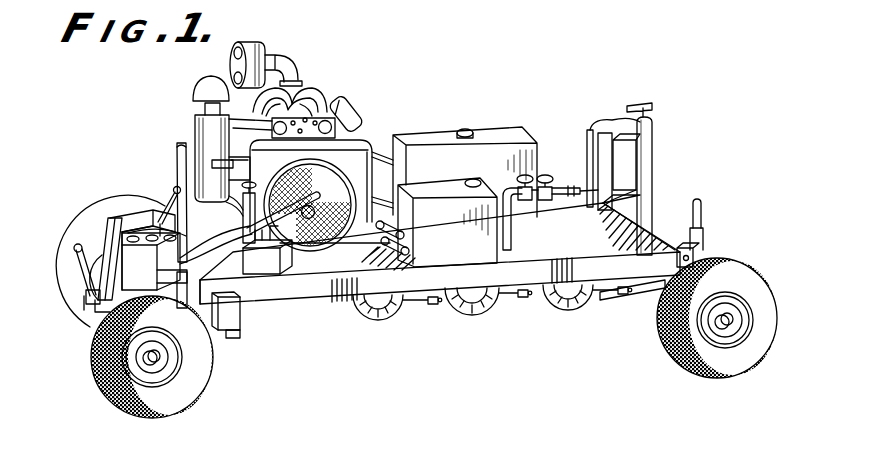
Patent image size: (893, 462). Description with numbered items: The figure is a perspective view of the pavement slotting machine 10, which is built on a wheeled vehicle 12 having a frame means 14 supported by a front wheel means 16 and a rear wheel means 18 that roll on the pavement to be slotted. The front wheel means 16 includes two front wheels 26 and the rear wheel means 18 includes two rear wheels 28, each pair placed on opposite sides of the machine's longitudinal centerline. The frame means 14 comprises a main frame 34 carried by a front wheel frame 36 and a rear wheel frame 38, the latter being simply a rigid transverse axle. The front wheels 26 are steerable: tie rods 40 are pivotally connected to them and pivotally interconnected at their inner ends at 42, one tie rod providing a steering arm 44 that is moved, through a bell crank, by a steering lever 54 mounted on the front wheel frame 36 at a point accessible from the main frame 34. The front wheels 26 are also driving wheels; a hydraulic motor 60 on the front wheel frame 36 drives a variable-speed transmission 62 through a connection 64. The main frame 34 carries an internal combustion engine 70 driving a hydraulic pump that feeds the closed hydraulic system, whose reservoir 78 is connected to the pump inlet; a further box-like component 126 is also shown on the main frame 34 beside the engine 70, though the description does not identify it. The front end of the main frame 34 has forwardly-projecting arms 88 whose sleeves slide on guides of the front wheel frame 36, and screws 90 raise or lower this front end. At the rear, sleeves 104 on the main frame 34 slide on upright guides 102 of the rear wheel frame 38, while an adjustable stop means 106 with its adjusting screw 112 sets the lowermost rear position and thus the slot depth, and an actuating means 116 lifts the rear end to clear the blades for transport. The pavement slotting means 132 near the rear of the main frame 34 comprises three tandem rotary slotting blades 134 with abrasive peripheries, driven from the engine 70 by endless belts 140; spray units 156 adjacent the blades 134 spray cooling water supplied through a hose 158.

The pavement slotting machine 10 is at (494, 88).
The wheeled vehicle 12 is at (555, 109).
The frame means 14 is at (315, 299).
The front wheel means 16 is at (134, 317).
The rear wheel means 18 is at (671, 275).
The front wheels 26 is at (177, 410).
The rear wheels 28 is at (735, 272).
The main frame 34 is at (290, 300).
The front wheel frame 36 is at (100, 272).
The rear wheel frame 38 is at (653, 298).
The tie rods 40 is at (75, 262).
The pivotal interconnection of tie rods 42 is at (90, 288).
The steering arm 44 is at (83, 300).
The steering lever 54 is at (178, 157).
The hydraulic motor 60 is at (137, 220).
The variable-speed transmission 62 is at (176, 199).
The connection 64 is at (115, 223).
The internal combustion engine 70 is at (362, 130).
The reservoir 78 is at (490, 250).
The forwardly-projecting arms 88 is at (208, 333).
The screws 90 is at (176, 260).
The upright guides 102 is at (702, 212).
The sleeves 104 is at (703, 240).
The adjustable stop means 106 is at (653, 139).
The adjusting screw 112 is at (652, 104).
The actuating means 116 is at (607, 208).
The fuel tank 126 is at (282, 262).
The pavement slotting means 132 is at (492, 321).
The rotary slotting blades 134 is at (375, 321).
The endless belts 140 is at (380, 173).
The spray units 156 is at (430, 304).
The hose 158 is at (562, 183).